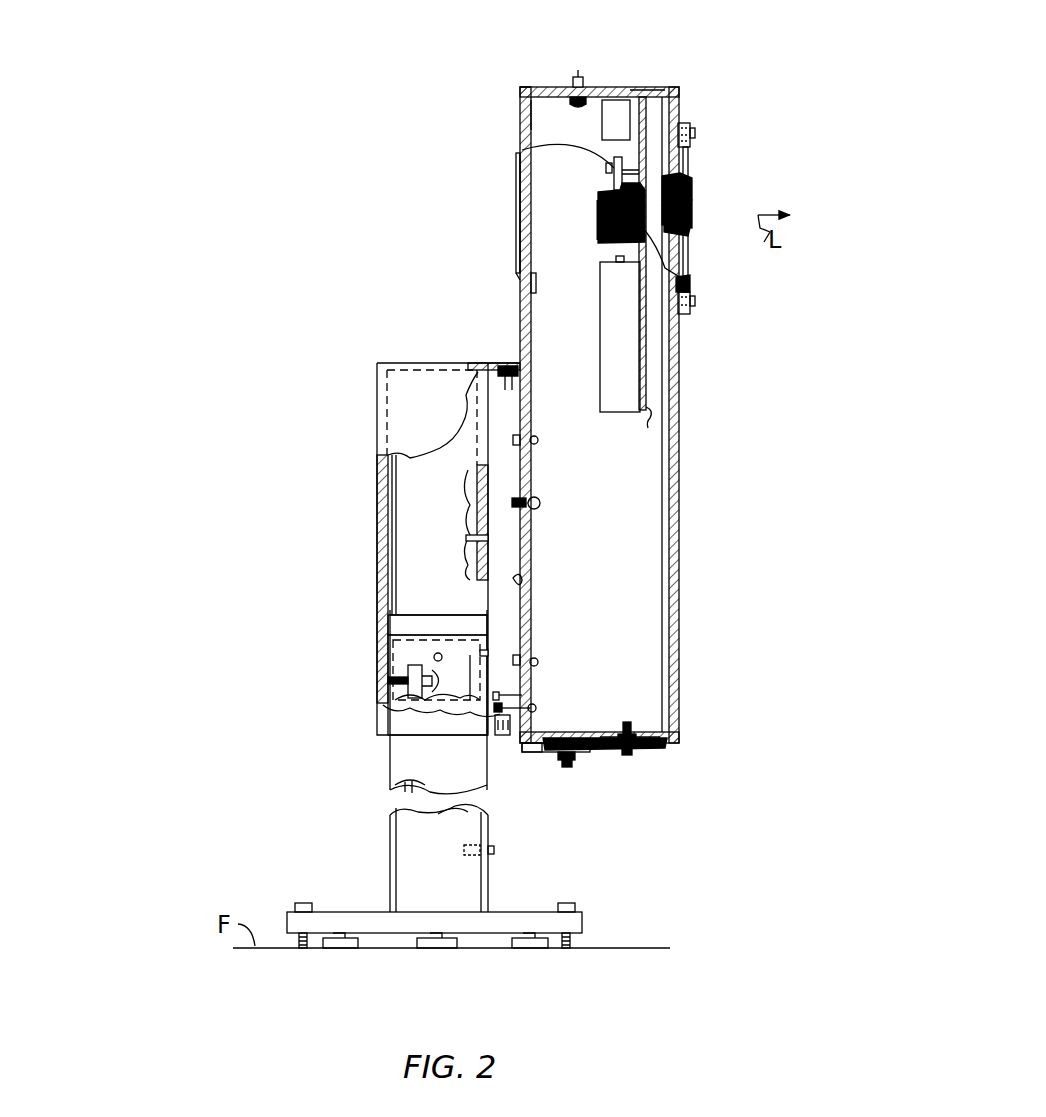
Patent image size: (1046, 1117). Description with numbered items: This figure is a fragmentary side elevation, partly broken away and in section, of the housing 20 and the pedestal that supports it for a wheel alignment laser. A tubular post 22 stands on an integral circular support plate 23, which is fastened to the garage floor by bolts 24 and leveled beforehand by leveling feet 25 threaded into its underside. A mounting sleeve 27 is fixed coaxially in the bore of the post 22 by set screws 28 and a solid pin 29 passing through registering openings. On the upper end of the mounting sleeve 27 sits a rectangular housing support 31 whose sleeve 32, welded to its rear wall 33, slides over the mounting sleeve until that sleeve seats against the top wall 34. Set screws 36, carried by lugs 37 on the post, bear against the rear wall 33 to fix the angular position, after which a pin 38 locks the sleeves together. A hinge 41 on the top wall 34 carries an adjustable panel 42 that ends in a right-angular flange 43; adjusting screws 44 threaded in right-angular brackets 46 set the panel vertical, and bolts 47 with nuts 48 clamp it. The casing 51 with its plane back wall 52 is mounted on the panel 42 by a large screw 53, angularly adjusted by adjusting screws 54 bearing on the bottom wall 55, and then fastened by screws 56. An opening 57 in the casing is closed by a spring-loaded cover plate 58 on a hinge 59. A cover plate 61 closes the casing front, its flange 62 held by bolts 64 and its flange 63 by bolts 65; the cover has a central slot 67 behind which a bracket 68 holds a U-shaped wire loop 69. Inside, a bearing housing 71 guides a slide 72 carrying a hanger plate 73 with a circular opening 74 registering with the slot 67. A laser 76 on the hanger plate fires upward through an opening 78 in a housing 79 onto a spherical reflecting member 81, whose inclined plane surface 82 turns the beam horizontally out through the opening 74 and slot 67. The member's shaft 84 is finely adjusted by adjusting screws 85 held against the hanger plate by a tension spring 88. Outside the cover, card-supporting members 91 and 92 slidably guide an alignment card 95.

The housing 20 is at (488, 72).
The tubular post 22 is at (392, 846).
The support plate 23 is at (514, 912).
The bolts 24 is at (302, 902).
The leveling feet 25 is at (345, 946).
The mounting sleeve 27 is at (393, 622).
The set screws 28 is at (390, 650).
The solid pin 29 is at (438, 652).
The housing support 31 is at (377, 380).
The sleeve 32 is at (408, 490).
The rear wall 33 is at (378, 472).
The top wall 34 is at (468, 362).
The set screws 36 is at (395, 680).
The lugs 37 is at (390, 712).
The pin 38 is at (468, 538).
The hinge 41 is at (507, 365).
The adjustable panel 42 is at (522, 578).
The right-angular flange 43 is at (542, 752).
The adjusting screws 44 is at (472, 700).
The right-angular brackets 46 is at (505, 692).
The bolts 47 is at (536, 708).
The nuts 48 is at (500, 738).
The casing 51 is at (520, 97).
The back wall 52 is at (522, 118).
The large screw 53 is at (540, 503).
The adjusting screws 54 is at (572, 766).
The bottom wall 55 is at (660, 728).
The screws 56 is at (538, 440).
The opening 57 is at (517, 210).
The cover plate 58 is at (516, 240).
The hinge 59 is at (536, 282).
The cover plate 61 is at (680, 452).
The flange 62 is at (650, 92).
The flange 63 is at (665, 748).
The bolts 64 is at (578, 76).
The bolts 65 is at (630, 752).
The slot 67 is at (688, 228).
The bracket 68 is at (690, 183).
The wire loop 69 is at (745, 220).
The bearing housing 71 is at (604, 125).
The slide 72 is at (638, 100).
The hanger plate 73 is at (637, 427).
The circular opening 74 is at (688, 285).
The laser 76 is at (600, 352).
The opening 78 is at (622, 246).
The housing 79 is at (598, 210).
The spherical reflecting member 81 is at (610, 222).
The plane surface 82 is at (610, 195).
The shaft 84 is at (522, 150).
The adjusting screws 85 is at (608, 168).
The tension spring 88 is at (680, 186).
The card-supporting member 91 is at (688, 125).
The card-supporting member 92 is at (690, 312).
The alignment card 95 is at (690, 262).